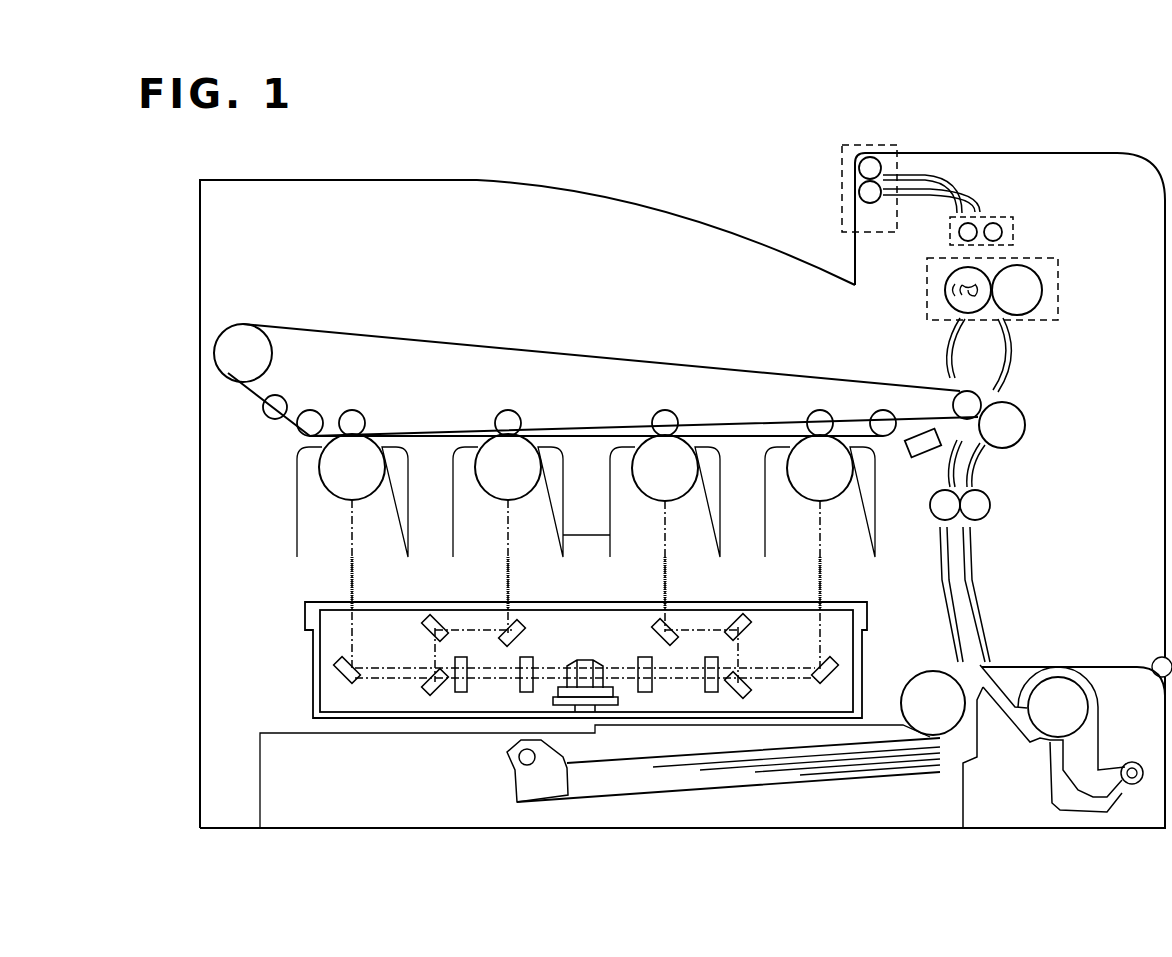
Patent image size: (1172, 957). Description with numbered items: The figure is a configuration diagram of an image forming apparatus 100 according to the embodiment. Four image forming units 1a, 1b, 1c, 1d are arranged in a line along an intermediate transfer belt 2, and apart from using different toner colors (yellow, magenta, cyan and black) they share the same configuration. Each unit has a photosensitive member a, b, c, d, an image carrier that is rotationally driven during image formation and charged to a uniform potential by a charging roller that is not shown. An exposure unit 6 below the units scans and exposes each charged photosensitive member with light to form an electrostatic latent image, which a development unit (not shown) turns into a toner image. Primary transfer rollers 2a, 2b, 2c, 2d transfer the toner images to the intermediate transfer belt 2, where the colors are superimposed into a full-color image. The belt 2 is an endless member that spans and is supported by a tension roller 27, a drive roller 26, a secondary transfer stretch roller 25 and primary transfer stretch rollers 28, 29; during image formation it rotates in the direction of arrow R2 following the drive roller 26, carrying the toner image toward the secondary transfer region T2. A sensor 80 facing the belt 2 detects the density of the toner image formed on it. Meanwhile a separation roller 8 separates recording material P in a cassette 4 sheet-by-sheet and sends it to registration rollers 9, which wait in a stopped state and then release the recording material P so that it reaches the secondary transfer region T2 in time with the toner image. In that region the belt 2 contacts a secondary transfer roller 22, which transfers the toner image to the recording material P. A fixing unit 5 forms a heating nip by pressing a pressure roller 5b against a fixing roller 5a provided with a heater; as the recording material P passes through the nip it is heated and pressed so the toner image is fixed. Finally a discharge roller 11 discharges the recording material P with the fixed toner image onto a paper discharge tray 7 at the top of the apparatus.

The image forming apparatus 100 is at (1095, 110).
The paper discharge tray 7 is at (625, 202).
The cassette 4 is at (383, 822).
The intermediate transfer belt 2 is at (440, 342).
The drive roller 26 is at (246, 333).
The tension roller 27 is at (278, 400).
The primary transfer stretch roller 28 is at (312, 412).
The primary transfer roller 2a is at (352, 412).
The primary transfer roller 2b is at (508, 412).
The primary transfer roller 2c is at (665, 412).
The primary transfer roller 2d is at (818, 412).
The primary transfer stretch roller 29 is at (881, 412).
The secondary transfer stretch roller 25 is at (958, 406).
The secondary transfer roller 22 is at (1018, 432).
The secondary transfer region T2 is at (990, 416).
The arrow indicating belt rotation direction R2 is at (572, 426).
The sensor 80 is at (922, 458).
The registration rollers 9 is at (985, 505).
The fixing unit 5 is at (989, 268).
The fixing roller 5a is at (945, 290).
The pressure roller 5b is at (1032, 290).
The discharge roller 11 is at (872, 160).
The image forming unit 1a is at (339, 515).
The image forming unit 1b is at (495, 515).
The image forming unit 1c is at (652, 516).
The image forming unit 1d is at (807, 516).
The photosensitive member a is at (330, 480).
The photosensitive member b is at (486, 480).
The photosensitive member c is at (643, 480).
The photosensitive member d is at (798, 480).
The exposure unit 6 is at (328, 697).
The recording material P is at (715, 775).
The separation roller 8 is at (930, 678).